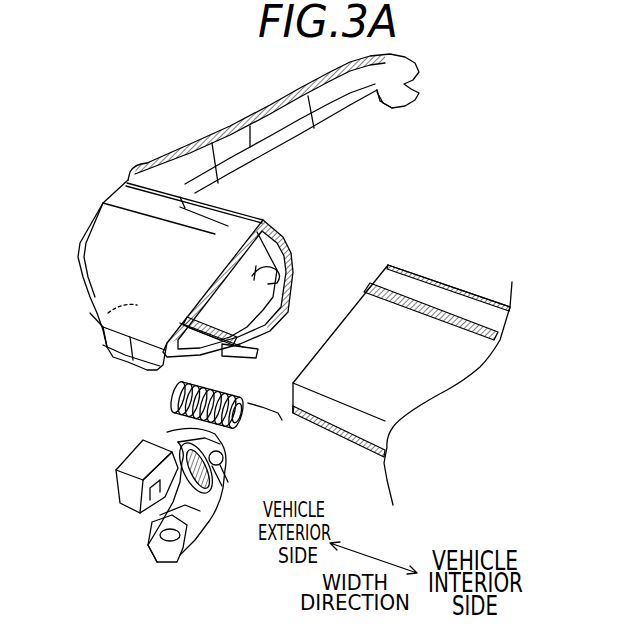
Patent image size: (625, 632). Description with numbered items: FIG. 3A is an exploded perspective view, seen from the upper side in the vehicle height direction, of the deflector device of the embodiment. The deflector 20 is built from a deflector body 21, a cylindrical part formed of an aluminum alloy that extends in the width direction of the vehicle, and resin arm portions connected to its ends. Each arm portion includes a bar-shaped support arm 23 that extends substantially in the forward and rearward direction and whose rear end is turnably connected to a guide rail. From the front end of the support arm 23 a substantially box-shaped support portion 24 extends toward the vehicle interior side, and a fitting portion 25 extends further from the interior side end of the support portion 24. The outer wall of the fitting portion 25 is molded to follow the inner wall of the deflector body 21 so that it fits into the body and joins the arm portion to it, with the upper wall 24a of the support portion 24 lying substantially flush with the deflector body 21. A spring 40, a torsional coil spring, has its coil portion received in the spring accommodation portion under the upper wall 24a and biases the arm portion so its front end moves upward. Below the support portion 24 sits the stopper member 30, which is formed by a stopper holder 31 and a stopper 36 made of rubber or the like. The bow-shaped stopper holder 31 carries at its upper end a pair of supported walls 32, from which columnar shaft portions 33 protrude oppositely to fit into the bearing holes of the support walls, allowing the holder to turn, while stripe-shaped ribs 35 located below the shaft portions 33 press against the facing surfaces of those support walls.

The deflector 20 is at (416, 180).
The deflector body 21 is at (444, 298).
The support arm 23 is at (350, 92).
The support portion 24 is at (228, 206).
The upper wall 24a is at (120, 309).
The fitting portion 25 is at (278, 275).
The stopper member 30 is at (70, 497).
The stopper holder 31 is at (148, 556).
The supported walls 32 is at (226, 482).
The shaft portions 33 is at (182, 429).
The ribs 35 is at (224, 463).
The stopper 36 is at (120, 490).
The spring 40 is at (244, 424).